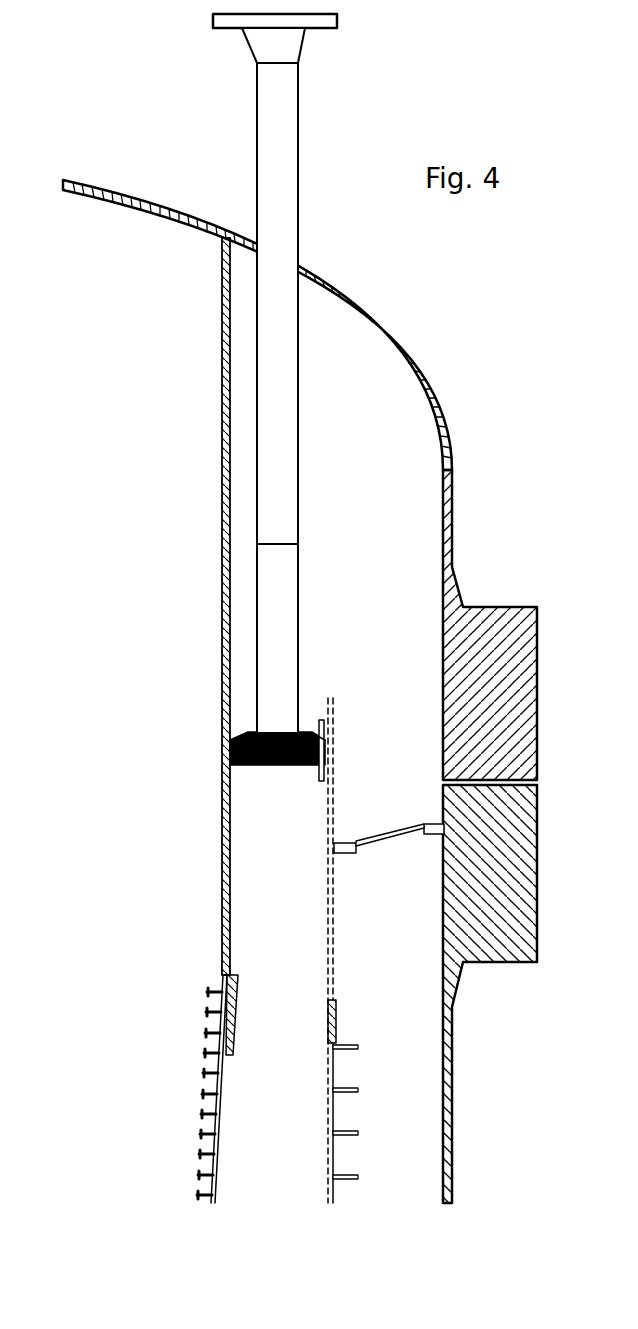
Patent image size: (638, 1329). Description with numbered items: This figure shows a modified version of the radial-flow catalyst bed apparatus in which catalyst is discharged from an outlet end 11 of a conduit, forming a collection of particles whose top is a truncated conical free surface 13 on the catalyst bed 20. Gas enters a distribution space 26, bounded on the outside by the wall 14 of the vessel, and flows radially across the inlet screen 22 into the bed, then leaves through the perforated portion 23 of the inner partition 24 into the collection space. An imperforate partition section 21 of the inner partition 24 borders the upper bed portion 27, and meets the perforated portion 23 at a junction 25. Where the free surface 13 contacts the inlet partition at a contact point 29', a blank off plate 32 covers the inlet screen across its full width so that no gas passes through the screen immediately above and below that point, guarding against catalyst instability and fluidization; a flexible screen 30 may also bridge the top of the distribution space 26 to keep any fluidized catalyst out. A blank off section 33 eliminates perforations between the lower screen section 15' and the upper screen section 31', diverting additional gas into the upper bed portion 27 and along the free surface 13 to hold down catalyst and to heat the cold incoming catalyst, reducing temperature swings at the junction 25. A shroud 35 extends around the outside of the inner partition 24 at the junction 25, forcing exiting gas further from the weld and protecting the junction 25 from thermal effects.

The outlet end 11 is at (309, 733).
The truncated conical surface 13 is at (250, 733).
The wall of the vessel 14 is at (447, 1022).
The lower screen section 15' is at (314, 1142).
The catalyst bed 20 is at (297, 1147).
The imperforate partition section 21 is at (222, 850).
The inlet screen 22 is at (356, 1075).
The perforated portion 23 is at (208, 1100).
The inner partition 24 is at (165, 1050).
The junction 25 is at (222, 992).
The distribution space 26 is at (400, 1167).
The upper bed portion 27 is at (297, 850).
The contact point 29' is at (348, 719).
The flexible screen 30 is at (425, 826).
The upper screen section 31' is at (360, 950).
The blank off plate 32 is at (319, 737).
The blank off section 33 is at (336, 1007).
The shroud 35 is at (237, 982).